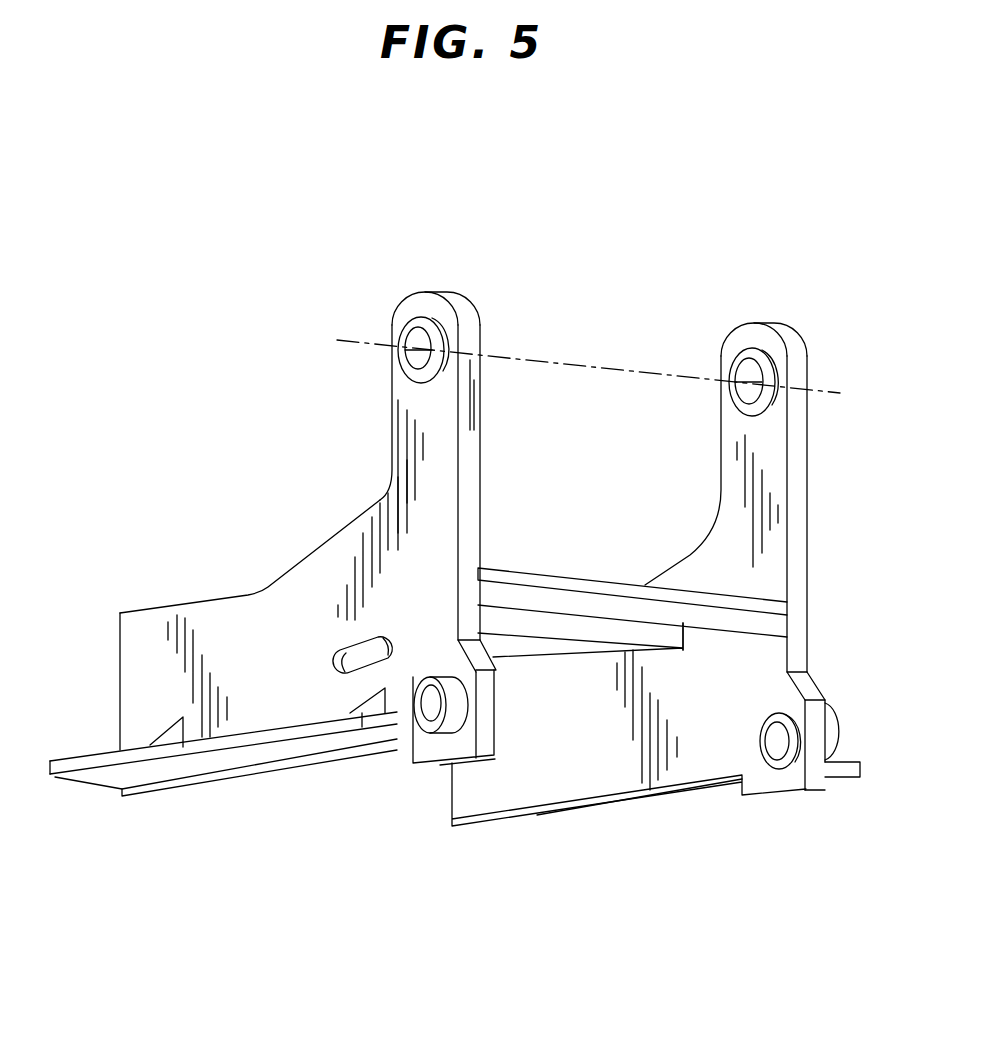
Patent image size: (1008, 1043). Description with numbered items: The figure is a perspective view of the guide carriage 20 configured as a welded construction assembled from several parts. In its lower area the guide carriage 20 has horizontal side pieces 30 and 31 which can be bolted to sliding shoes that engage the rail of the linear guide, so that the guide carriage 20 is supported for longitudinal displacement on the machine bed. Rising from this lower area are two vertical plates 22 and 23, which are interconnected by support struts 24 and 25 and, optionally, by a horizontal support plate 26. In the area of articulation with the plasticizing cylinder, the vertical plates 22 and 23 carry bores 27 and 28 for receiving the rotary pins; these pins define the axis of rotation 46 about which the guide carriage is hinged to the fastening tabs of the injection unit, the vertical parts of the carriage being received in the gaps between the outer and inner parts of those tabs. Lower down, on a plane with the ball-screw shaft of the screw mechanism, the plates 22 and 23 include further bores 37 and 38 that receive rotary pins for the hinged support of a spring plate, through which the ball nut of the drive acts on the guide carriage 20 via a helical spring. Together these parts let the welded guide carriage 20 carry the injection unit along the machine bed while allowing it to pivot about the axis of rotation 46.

The guide carriage 20 is at (525, 225).
The vertical plate 22 is at (122, 673).
The vertical plate 23 is at (615, 785).
The support strut 24 is at (554, 626).
The support strut 25 is at (695, 621).
The horizontal support plate 26 is at (585, 578).
The bore 27 is at (408, 322).
The bore 28 is at (744, 355).
The horizontal side piece 30 is at (92, 782).
The horizontal side piece 31 is at (840, 778).
The bore 37 is at (425, 703).
The bore 38 is at (808, 686).
The axis of rotation 46 is at (365, 342).